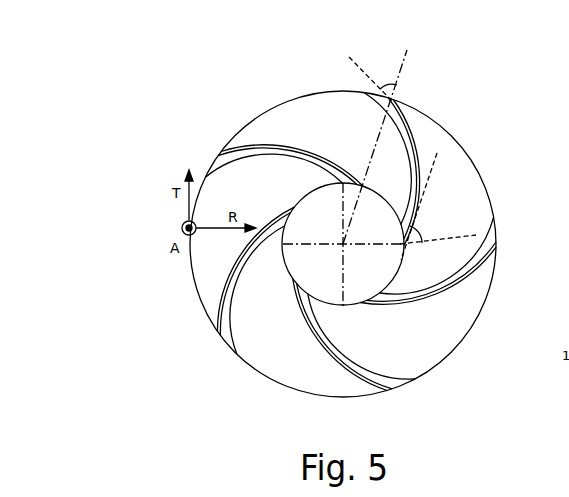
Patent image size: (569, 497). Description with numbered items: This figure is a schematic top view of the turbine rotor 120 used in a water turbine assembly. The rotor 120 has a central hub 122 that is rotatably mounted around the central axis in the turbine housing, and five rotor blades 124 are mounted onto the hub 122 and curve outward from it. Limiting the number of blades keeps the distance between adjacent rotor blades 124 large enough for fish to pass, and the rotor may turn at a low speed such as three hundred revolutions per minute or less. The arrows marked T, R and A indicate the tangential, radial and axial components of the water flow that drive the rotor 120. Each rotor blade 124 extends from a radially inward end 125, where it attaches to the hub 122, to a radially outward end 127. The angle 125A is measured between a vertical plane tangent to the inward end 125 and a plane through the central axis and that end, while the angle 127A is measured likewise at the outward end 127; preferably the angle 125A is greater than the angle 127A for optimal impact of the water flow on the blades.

The turbine rotor 120 is at (492, 117).
The central hub 122 is at (350, 244).
The rotor blade 124 is at (404, 381).
The radially inward end 125 is at (406, 244).
The angle at radially inward end 125A is at (438, 206).
The radially outward end 127 is at (394, 101).
The angle at radially outward end 127A is at (375, 146).